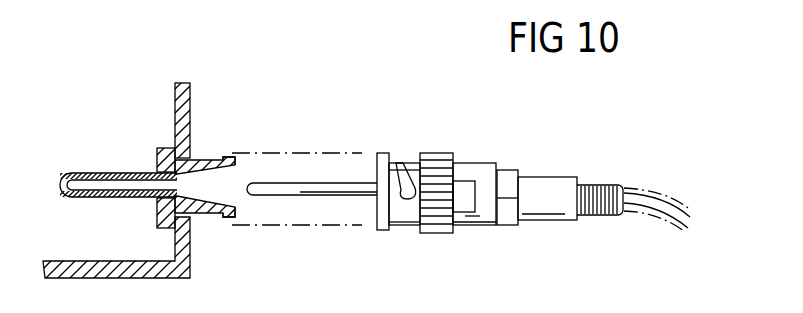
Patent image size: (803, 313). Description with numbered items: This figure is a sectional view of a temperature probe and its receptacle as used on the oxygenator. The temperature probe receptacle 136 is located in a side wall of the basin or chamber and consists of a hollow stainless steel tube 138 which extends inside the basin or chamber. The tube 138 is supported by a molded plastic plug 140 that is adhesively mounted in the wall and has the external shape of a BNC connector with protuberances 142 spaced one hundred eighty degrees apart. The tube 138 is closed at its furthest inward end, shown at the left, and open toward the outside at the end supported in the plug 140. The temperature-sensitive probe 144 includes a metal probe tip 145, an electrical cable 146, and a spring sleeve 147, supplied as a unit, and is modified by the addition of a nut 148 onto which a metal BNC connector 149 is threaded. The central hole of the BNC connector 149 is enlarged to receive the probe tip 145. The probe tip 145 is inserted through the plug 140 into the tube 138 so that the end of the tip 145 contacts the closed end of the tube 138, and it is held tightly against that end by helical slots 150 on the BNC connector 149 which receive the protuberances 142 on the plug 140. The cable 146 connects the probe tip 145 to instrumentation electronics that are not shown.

The temperature probe receptacle 136 is at (209, 146).
The hollow stainless steel tube 138 is at (93, 172).
The molded plastic plug 140 is at (198, 210).
The protuberances 142 is at (230, 157).
The temperature-sensitive probe 144 is at (443, 133).
The metal probe tip 145 is at (325, 198).
The electrical cable 146 is at (665, 208).
The spring sleeve 147 is at (588, 184).
The nut 148 is at (572, 160).
The metal BNC connector 149 is at (495, 242).
The helical slots 150 is at (399, 163).